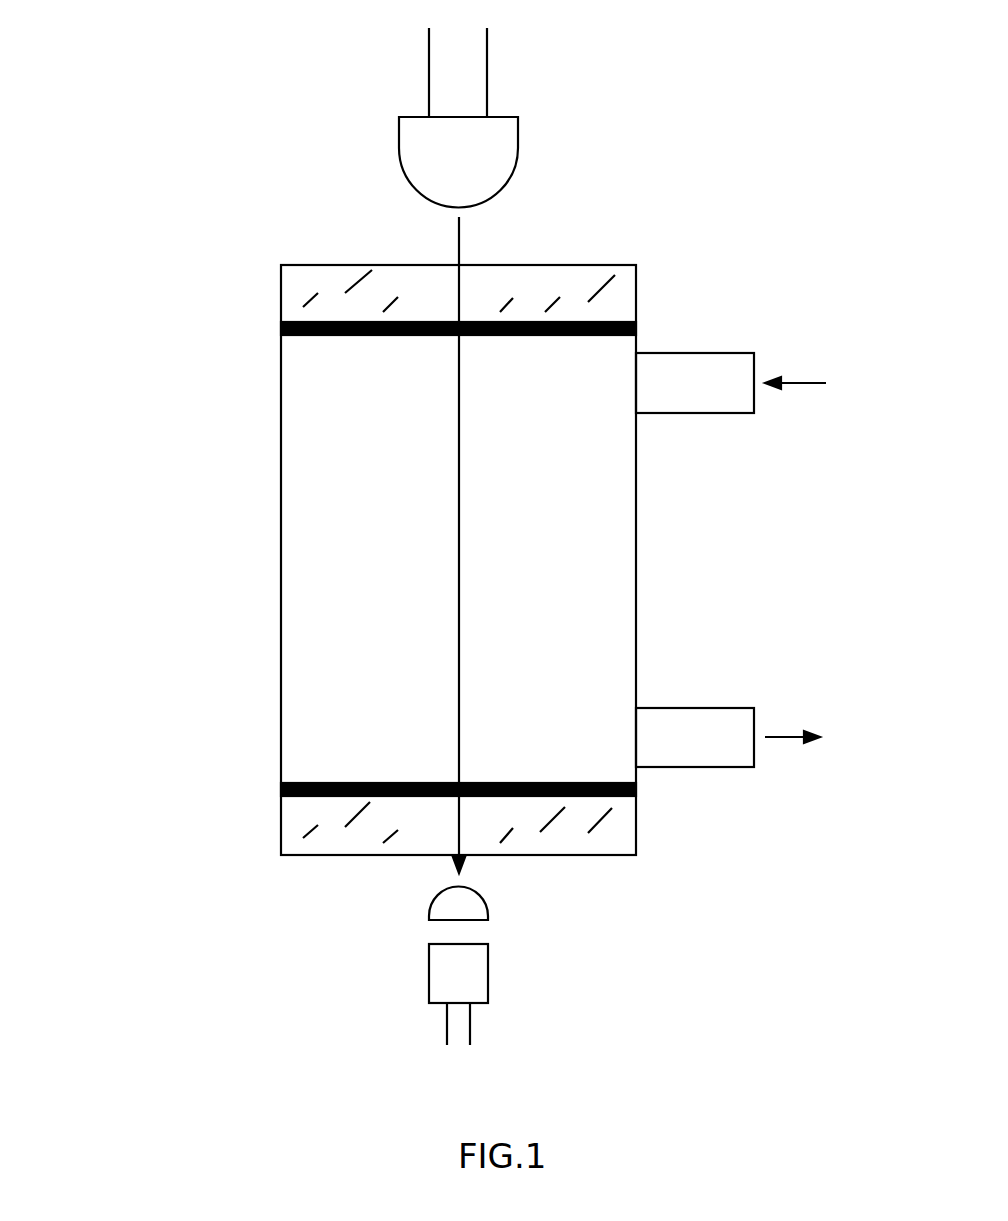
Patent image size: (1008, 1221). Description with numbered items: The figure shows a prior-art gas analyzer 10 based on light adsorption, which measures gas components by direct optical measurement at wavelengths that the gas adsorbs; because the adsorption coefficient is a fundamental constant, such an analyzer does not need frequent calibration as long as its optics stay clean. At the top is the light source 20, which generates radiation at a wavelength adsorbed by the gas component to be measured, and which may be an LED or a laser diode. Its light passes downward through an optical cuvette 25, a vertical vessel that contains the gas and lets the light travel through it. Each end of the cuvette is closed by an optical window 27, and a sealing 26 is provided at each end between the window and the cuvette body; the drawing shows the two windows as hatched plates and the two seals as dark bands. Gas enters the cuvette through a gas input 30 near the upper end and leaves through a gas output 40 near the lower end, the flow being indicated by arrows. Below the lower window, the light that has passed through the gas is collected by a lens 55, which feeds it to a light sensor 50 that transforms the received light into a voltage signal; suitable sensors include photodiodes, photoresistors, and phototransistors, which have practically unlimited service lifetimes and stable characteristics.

The gas analyzer 10 is at (842, 202).
The light source 20 is at (399, 147).
The optical cuvette 25 is at (280, 502).
The sealing 26 is at (636, 330).
The optical window 27 is at (552, 265).
The gas input 30 is at (683, 352).
The gas output 40 is at (683, 708).
The light sensor 50 is at (428, 973).
The lens 55 is at (487, 908).